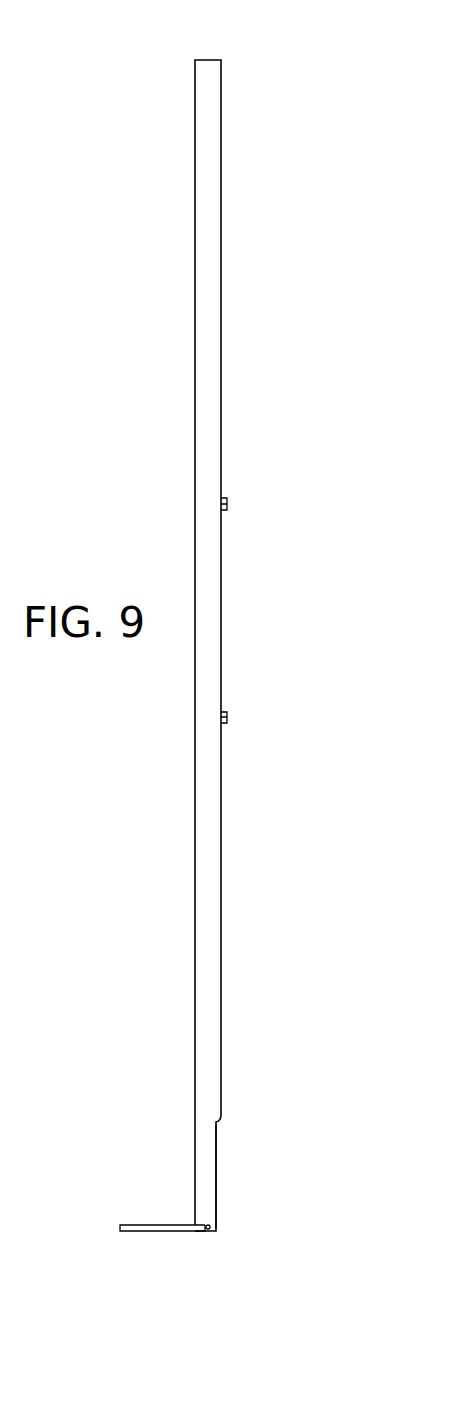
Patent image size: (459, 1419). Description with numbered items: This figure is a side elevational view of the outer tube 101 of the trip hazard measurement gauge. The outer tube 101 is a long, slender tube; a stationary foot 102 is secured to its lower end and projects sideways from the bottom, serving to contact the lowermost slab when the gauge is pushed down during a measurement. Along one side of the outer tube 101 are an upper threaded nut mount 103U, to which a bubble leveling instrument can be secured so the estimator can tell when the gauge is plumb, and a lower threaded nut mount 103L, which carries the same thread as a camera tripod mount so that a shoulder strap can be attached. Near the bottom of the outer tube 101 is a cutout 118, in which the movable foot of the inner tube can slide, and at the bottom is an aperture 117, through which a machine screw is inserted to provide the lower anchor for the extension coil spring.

The outer tube 101 is at (209, 398).
The stationary foot 102 is at (160, 1226).
The upper threaded nut mount 103U is at (228, 500).
The lower threaded nut mount 103L is at (228, 718).
The aperture 117 is at (212, 1231).
The cutout 118 is at (216, 1170).